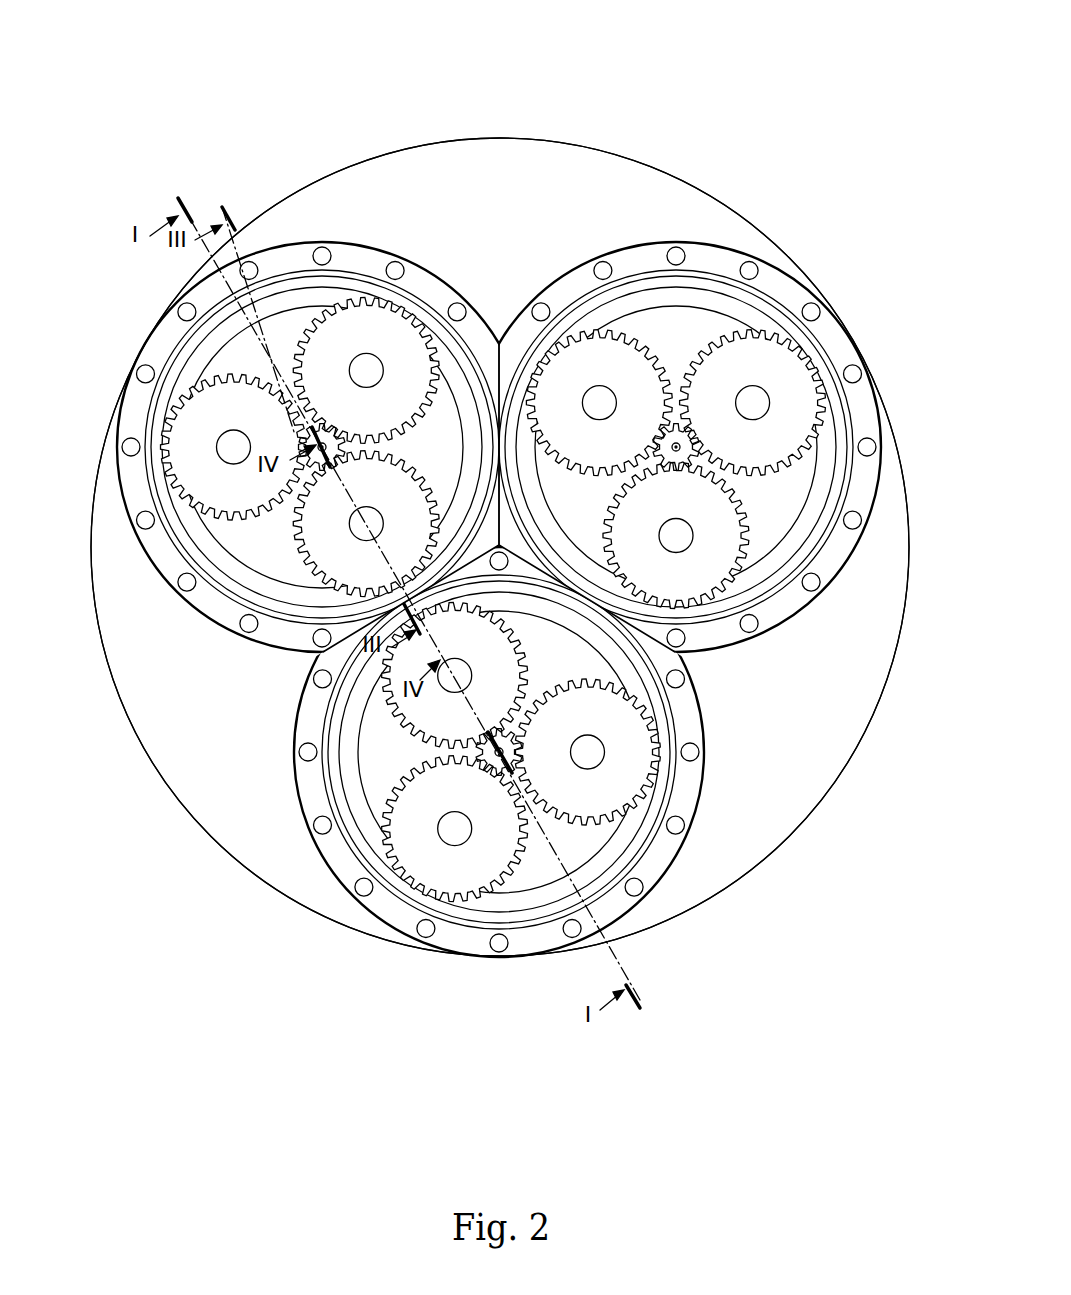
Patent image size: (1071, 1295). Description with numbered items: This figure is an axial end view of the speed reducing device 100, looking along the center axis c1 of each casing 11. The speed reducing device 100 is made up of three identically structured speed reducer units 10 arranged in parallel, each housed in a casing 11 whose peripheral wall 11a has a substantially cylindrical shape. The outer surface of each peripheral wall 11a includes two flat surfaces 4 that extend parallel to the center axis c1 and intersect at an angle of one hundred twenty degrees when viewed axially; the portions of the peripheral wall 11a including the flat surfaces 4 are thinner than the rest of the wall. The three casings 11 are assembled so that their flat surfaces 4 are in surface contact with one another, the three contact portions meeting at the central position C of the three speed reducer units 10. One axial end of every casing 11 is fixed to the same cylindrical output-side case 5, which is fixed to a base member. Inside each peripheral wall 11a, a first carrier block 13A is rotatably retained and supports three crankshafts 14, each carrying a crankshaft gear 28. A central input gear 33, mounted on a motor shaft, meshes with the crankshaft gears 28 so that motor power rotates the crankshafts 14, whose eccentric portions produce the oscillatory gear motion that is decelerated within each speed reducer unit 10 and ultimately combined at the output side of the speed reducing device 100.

The speed reducing device 100 is at (712, 140).
The speed reducer unit 10 is at (288, 236).
The casing 11 is at (376, 280).
The peripheral wall 11a is at (337, 262).
The first carrier block 13A is at (690, 320).
The flat surface 4 is at (492, 338).
The central position C is at (502, 540).
The crankshaft gear 28 is at (405, 335).
The crankshaft 14 is at (372, 355).
The input gear 33 is at (682, 428).
The center axis c1 is at (690, 447).
The output-side case 5 is at (425, 922).